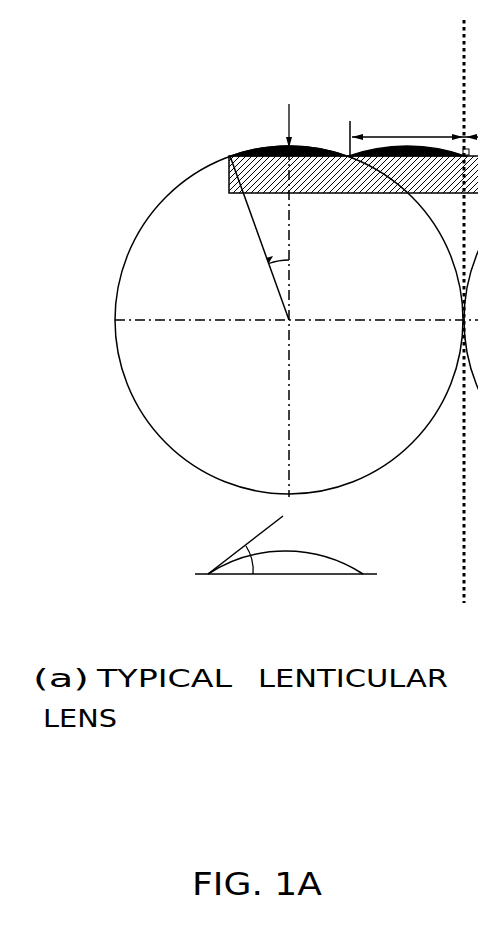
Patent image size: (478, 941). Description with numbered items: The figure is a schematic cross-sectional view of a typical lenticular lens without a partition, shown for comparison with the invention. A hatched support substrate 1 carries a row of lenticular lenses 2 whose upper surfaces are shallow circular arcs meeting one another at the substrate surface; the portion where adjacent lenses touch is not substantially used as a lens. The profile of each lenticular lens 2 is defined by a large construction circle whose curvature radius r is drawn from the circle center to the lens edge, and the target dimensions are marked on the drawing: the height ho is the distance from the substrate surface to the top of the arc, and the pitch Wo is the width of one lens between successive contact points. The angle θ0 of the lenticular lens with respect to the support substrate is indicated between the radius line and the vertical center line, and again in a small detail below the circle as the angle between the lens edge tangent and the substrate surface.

The support substrate 1 is at (353, 194).
The lenticular lens 2 is at (315, 155).
The angle θ 0 is at (280, 415).
The curvature radius r is at (250, 238).
The height h0 ho is at (279, 111).
The pitch w0 Wo is at (414, 129).